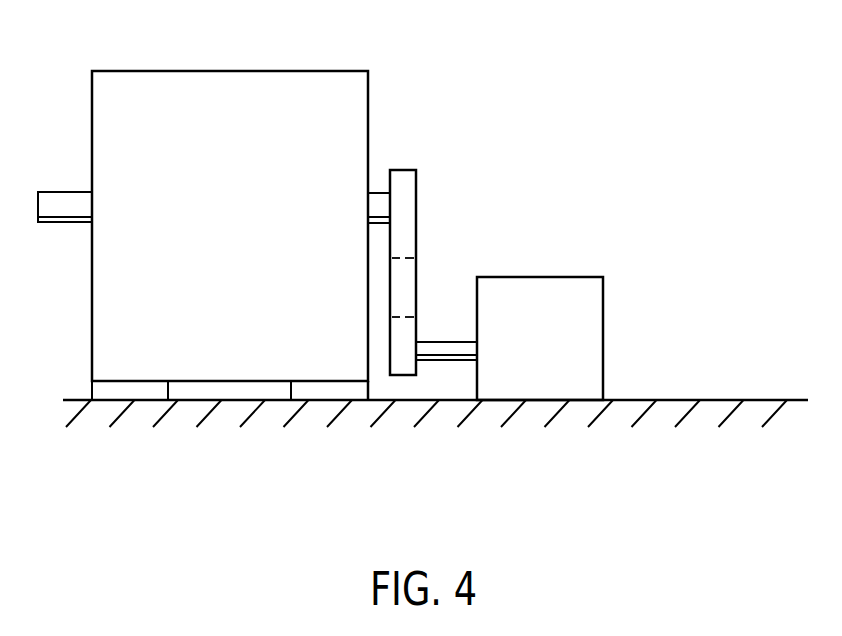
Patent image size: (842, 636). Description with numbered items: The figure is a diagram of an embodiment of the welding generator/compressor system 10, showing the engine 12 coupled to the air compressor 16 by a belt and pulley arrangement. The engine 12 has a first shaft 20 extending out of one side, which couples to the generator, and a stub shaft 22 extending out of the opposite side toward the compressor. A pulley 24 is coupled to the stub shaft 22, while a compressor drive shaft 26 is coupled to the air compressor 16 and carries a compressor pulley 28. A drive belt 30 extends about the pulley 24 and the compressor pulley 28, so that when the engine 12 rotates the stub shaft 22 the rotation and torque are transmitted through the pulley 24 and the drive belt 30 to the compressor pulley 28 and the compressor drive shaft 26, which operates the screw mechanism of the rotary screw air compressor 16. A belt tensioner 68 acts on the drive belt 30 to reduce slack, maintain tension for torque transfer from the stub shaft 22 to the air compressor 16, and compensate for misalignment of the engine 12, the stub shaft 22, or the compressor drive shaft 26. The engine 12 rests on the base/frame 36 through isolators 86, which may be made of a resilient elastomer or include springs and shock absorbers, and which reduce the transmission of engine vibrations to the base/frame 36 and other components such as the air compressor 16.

The welding generator/compressor system 10 is at (607, 86).
The engine 12 is at (142, 71).
The air compressor 16 is at (540, 277).
The first shaft 20 is at (63, 192).
The stub shaft 22 is at (378, 193).
The pulley 24 is at (405, 187).
The compressor drive shaft 26 is at (455, 353).
The compressor pulley 28 is at (405, 363).
The drive belt 30 is at (405, 280).
The base/frame 36 is at (680, 398).
The belt tensioner 68 is at (386, 286).
The isolators 86 is at (147, 392).